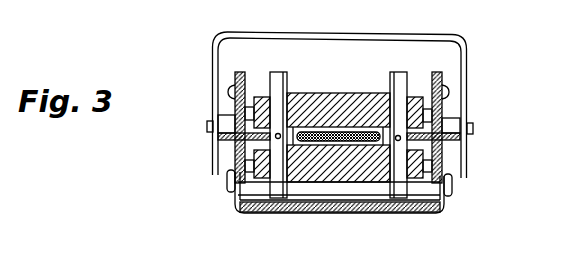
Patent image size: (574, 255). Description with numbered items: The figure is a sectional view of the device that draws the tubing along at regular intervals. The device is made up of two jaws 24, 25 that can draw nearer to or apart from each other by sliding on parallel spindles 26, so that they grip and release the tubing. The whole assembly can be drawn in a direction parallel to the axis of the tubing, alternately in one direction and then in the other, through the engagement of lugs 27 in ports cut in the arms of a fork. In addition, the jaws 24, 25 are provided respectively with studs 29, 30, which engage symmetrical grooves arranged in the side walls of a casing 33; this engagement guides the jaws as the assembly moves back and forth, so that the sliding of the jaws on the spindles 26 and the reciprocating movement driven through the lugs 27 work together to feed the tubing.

The jaw 24 is at (337, 101).
The jaw 25 is at (353, 180).
The parallel spindles 26 is at (273, 182).
The lugs 27 is at (207, 127).
The stud 29 is at (245, 112).
The stud 30 is at (245, 165).
The casing 33 is at (291, 207).